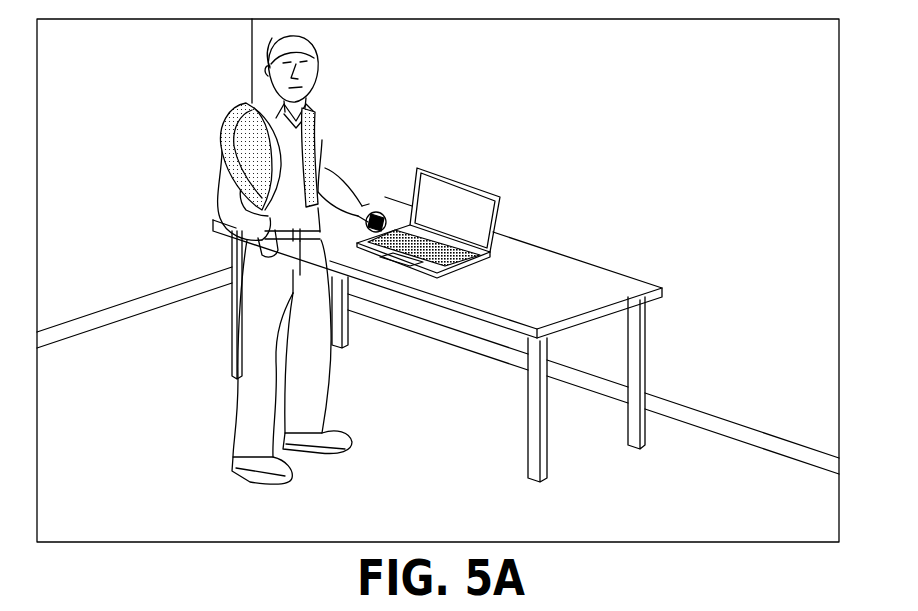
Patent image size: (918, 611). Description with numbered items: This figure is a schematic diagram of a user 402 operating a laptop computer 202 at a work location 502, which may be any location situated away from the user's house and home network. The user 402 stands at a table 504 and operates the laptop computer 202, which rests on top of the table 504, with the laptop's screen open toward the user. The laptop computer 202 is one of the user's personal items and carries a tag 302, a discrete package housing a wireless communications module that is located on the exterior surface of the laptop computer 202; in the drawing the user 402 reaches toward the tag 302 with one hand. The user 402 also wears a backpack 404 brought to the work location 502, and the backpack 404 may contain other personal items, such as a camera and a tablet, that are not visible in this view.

The laptop computer 202 is at (453, 167).
The tag 302 is at (377, 208).
The user 402 is at (273, 260).
The backpack 404 is at (222, 127).
The work location 502 is at (552, 146).
The table 504 is at (563, 305).